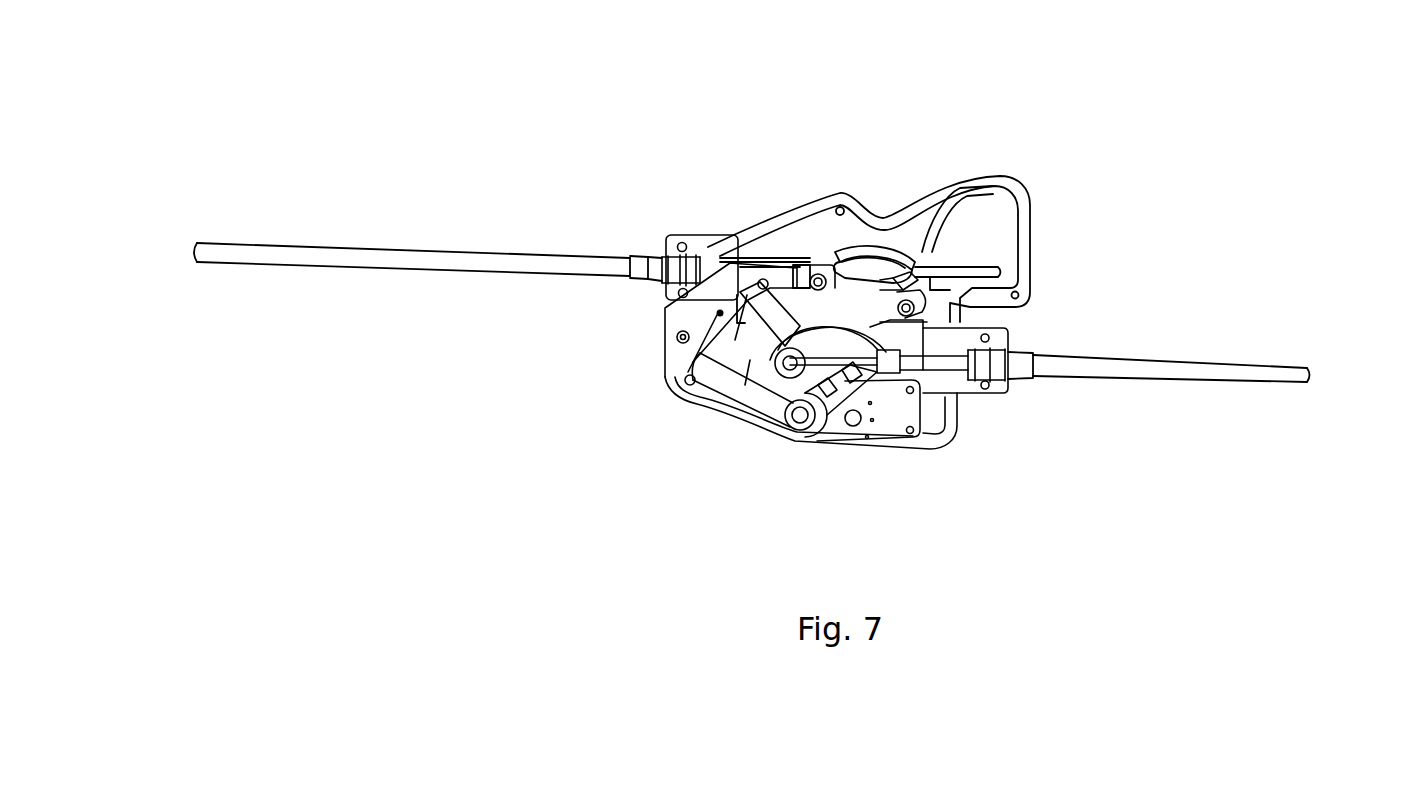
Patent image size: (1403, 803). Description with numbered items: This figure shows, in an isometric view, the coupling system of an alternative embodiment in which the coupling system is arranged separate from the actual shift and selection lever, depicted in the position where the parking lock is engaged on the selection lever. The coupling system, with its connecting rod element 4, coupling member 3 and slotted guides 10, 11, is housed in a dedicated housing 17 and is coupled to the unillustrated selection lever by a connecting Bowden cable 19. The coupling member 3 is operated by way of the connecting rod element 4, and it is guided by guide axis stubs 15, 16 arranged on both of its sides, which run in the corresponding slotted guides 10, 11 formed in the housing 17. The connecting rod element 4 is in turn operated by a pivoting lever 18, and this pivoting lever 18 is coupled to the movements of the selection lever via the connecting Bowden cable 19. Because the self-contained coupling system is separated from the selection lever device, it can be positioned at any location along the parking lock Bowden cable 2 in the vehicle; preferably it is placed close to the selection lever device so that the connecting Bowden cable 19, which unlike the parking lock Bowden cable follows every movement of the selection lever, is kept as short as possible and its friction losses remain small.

The parking lock Bowden cable 2 is at (397, 258).
The coupling member 3 is at (870, 263).
The connecting rod element 4 is at (783, 258).
The slotted guide 10 is at (957, 272).
The slotted guide 11 is at (938, 215).
The guide axis stub 15 is at (900, 284).
The guide axis stub 16 is at (816, 283).
The housing 17 is at (613, 402).
The pivoting lever 18 is at (753, 323).
The connecting Bowden cable 19 is at (1257, 370).